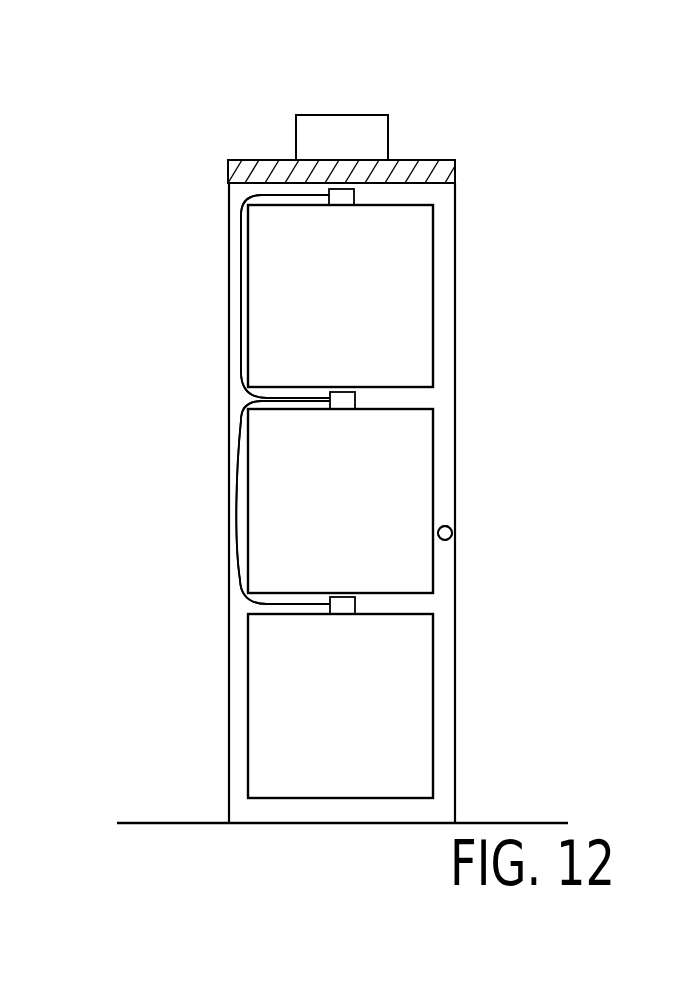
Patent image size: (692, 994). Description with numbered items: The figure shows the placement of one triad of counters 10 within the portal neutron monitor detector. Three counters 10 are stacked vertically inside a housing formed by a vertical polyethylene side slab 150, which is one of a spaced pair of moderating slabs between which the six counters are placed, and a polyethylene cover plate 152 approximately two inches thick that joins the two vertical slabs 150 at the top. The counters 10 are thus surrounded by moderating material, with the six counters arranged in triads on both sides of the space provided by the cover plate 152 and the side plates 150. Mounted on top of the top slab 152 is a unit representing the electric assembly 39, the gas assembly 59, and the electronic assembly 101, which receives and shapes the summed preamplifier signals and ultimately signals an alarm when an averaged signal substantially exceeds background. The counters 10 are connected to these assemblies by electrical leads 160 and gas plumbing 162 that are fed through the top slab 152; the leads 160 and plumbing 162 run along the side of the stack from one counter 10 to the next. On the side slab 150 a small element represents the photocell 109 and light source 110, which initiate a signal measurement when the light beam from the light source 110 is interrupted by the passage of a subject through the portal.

The counter 10 is at (433, 296).
The electric assembly 39 is at (342, 137).
The gas assembly 59 is at (388, 125).
The electronic assembly 101 is at (342, 137).
The photocell 109 is at (452, 535).
The light source 110 is at (445, 533).
The slab 150 is at (455, 762).
The slab 152 is at (455, 173).
The electrical leads 160 is at (240, 300).
The plumbing 162 is at (283, 399).